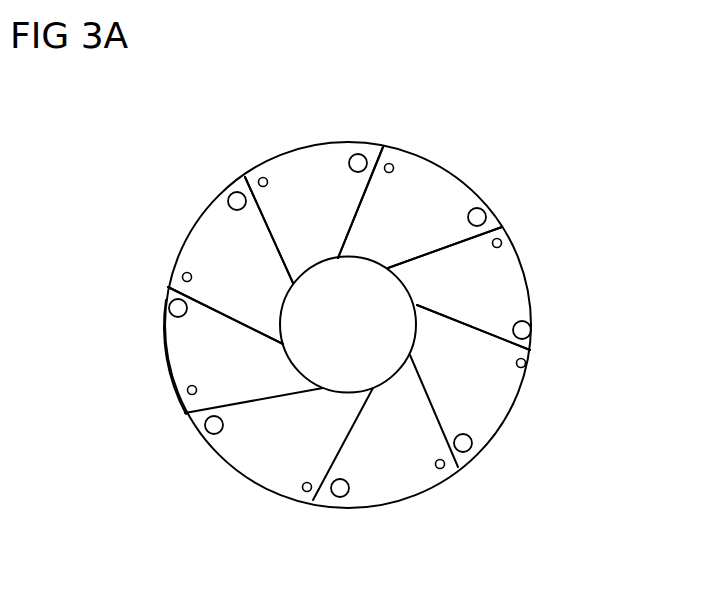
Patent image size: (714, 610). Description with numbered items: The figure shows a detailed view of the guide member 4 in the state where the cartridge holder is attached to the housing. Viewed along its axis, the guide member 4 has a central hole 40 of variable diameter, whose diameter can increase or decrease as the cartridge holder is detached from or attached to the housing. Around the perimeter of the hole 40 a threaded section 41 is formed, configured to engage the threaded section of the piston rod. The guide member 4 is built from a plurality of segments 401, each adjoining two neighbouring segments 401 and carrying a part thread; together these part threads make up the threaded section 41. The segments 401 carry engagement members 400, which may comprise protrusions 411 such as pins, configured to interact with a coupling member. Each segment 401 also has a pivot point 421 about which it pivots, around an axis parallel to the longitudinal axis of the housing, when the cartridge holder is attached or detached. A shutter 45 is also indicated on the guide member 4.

The guide member 4 is at (150, 146).
The hole 40 is at (375, 300).
The threaded section 41 is at (402, 370).
The engagement members 400 is at (395, 172).
The segment 401 is at (243, 240).
The protrusion 411 is at (390, 163).
The pivot point 421 is at (472, 440).
The shutter 45 is at (183, 410).